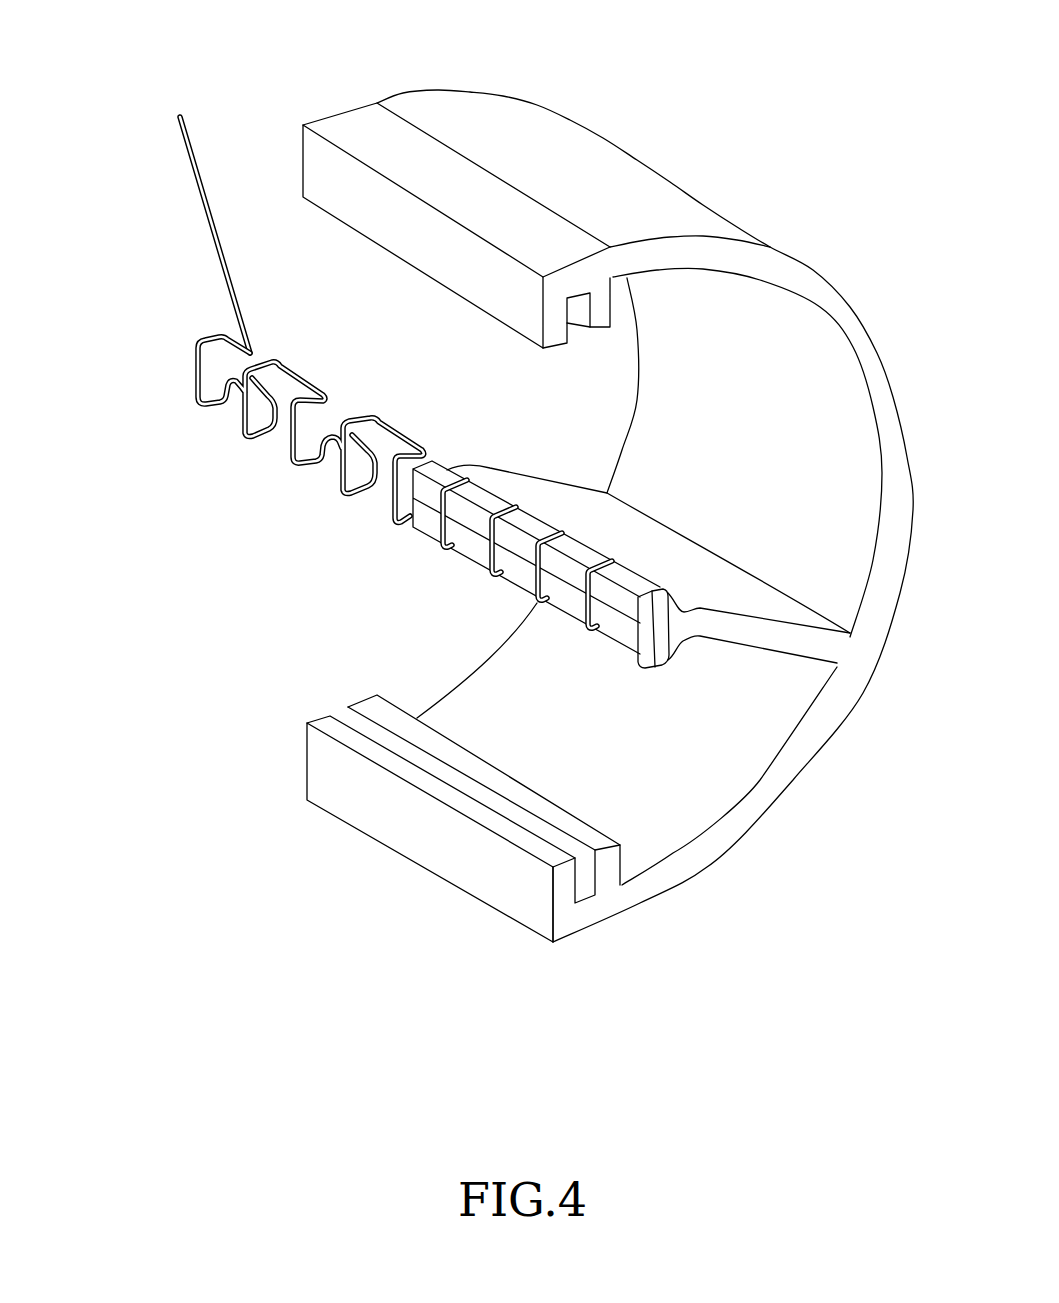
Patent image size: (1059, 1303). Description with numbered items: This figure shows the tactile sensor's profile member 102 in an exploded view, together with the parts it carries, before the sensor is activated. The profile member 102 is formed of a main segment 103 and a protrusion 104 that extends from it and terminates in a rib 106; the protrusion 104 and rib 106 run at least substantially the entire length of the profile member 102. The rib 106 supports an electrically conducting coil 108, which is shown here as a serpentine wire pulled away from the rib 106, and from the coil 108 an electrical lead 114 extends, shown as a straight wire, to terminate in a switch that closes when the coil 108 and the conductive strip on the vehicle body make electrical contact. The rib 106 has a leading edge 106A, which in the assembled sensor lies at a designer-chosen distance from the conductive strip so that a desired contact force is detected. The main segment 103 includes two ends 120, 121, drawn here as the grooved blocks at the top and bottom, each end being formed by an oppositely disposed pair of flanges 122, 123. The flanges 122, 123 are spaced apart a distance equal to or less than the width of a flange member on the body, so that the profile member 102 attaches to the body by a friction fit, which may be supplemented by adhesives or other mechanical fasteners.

The profile member 102 is at (523, 160).
The main segment 103 is at (775, 460).
The protrusion 104 is at (652, 554).
The rib 106 is at (470, 547).
The leading edge 106A is at (626, 633).
The electrically conducting coil 108 is at (197, 380).
The electrical lead 114 is at (192, 158).
The end 120 is at (301, 126).
The end 121 is at (553, 944).
The flange 122 is at (598, 333).
The flange 123 is at (554, 343).